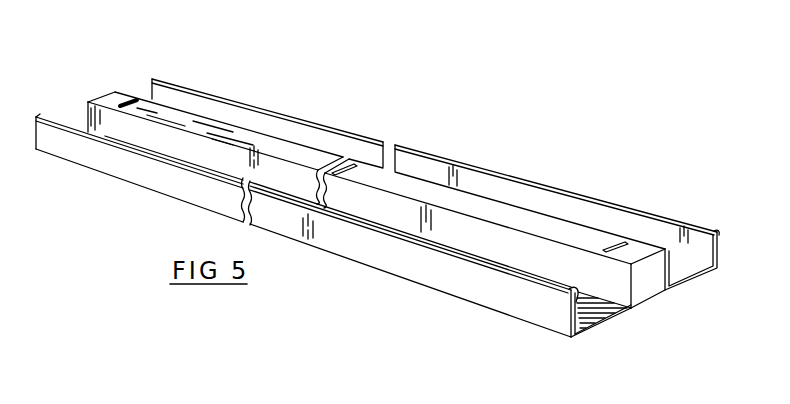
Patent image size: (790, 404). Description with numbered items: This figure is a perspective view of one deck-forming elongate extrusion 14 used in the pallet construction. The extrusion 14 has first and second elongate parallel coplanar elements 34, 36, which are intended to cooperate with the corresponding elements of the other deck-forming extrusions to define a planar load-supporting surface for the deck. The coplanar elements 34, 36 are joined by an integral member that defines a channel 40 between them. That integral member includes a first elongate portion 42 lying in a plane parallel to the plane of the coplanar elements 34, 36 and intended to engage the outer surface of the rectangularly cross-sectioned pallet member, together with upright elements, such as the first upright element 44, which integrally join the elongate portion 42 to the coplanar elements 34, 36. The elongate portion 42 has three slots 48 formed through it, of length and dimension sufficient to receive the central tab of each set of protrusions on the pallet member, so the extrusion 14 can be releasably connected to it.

The deck-forming elongate extrusion 14 is at (366, 270).
The first elongate coplanar element 34 is at (608, 321).
The second elongate coplanar element 36 is at (703, 280).
The channel 40 is at (650, 297).
The first elongate portion 42 is at (483, 205).
The first upright element 44 is at (485, 233).
The slots 48 is at (126, 102).